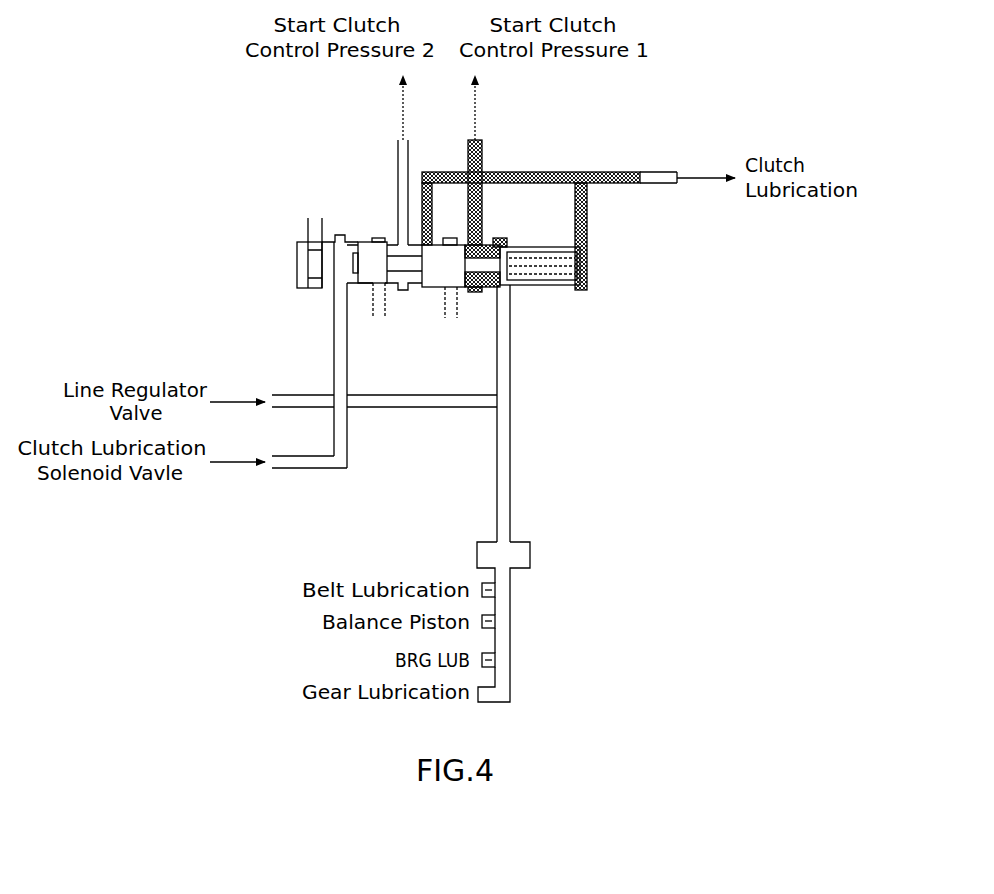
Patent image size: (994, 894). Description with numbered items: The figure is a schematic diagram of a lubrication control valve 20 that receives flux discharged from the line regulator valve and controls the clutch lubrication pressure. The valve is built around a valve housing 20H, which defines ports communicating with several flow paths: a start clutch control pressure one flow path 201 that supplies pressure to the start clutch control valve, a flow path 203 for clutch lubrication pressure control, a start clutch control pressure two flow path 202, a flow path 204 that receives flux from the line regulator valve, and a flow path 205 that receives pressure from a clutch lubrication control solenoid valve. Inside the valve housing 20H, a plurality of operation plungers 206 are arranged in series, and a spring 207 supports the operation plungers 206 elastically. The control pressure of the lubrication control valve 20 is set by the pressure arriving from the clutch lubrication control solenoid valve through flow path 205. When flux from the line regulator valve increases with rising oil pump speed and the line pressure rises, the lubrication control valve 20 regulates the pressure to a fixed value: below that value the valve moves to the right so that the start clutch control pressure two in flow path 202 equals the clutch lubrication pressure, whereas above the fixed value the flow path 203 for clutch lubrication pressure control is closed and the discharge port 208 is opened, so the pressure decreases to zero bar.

The lubrication control valve 20 is at (473, 386).
The valve housing 20H is at (368, 252).
The start clutch control pressure 1 flow path 201 is at (398, 152).
The start clutch control pressure 2 flow path 202 is at (482, 148).
The flow path for clutch lubrication pressure control 203 is at (440, 172).
The flow path receiving flux from the line regulator valve 204 is at (298, 405).
The flow path receiving pressure from the clutch lubrication control solenoid valve 205 is at (288, 468).
The operation plungers 206 is at (445, 290).
The spring 207 is at (535, 285).
The discharge port 208 is at (376, 315).